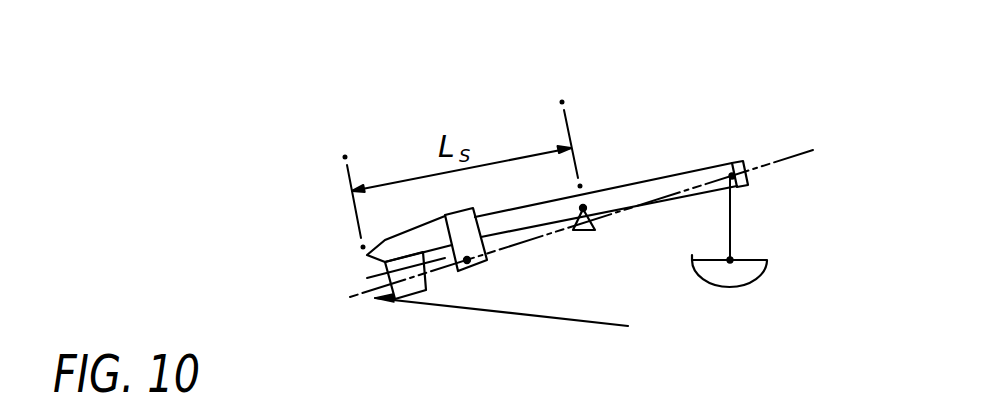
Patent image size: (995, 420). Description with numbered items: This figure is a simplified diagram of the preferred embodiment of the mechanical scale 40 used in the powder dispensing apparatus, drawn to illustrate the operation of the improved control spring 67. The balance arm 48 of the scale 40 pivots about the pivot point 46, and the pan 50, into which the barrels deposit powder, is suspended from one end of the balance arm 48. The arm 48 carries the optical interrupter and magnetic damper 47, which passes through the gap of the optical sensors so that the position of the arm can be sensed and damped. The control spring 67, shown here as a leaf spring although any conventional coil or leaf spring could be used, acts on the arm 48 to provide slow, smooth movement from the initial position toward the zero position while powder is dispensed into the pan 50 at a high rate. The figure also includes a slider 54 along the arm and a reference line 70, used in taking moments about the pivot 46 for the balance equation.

The mechanical scale 40 is at (708, 142).
The pivot point 46 is at (585, 231).
The optical interrupter and magnetic damper 47 is at (367, 278).
The balance arm 48 is at (632, 184).
The pan 50 is at (762, 275).
The sliding poise weight 54 is at (445, 215).
The control spring 67 is at (457, 308).
The reference line 70 is at (775, 163).